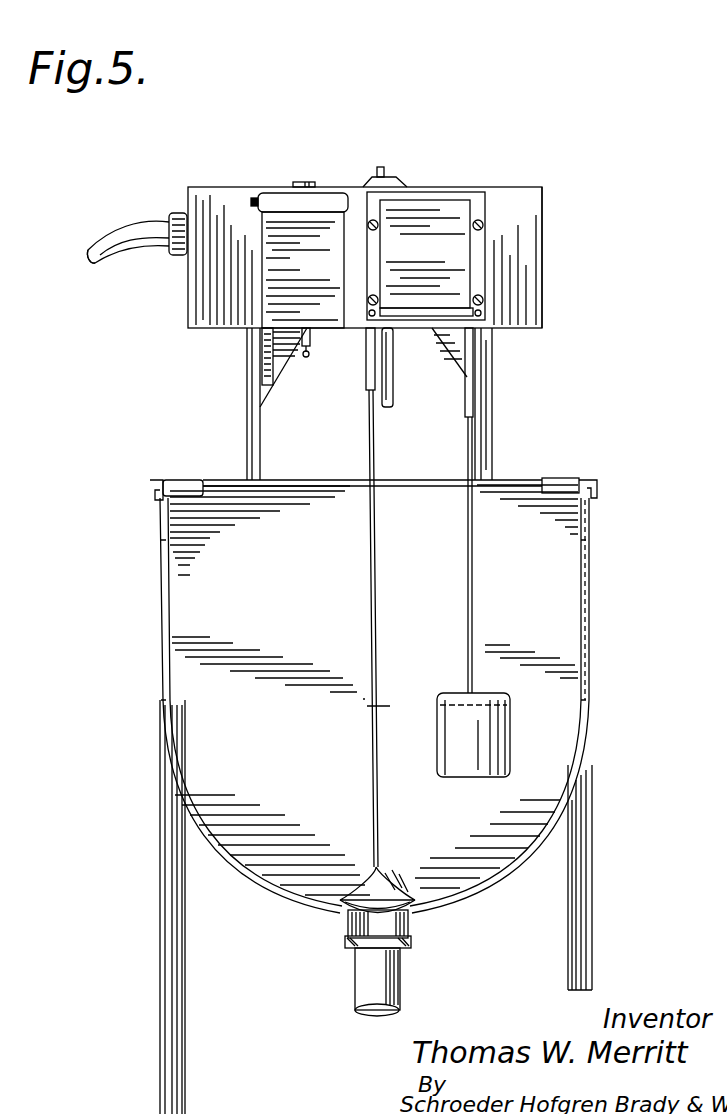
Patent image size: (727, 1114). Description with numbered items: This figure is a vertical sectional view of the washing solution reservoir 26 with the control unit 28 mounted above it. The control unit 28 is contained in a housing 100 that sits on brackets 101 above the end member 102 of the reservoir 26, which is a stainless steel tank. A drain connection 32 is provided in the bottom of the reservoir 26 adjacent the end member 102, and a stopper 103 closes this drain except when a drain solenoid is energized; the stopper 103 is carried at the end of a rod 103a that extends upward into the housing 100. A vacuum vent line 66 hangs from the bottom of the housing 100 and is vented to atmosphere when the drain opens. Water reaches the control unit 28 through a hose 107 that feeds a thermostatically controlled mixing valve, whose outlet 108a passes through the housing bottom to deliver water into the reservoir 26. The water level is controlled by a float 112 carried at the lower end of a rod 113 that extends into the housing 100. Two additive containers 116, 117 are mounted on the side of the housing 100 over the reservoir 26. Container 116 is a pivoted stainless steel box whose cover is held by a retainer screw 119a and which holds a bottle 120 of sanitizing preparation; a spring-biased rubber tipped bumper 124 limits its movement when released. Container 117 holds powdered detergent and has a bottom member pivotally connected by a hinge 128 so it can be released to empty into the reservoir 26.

The washing solution reservoir 26 is at (587, 657).
The control unit 28 is at (513, 186).
The drain connection 32 is at (400, 980).
The vacuum vent line 66 is at (393, 392).
The housing 100 is at (542, 280).
The brackets 101 is at (247, 428).
The end member 102 is at (374, 690).
The stopper 103 is at (395, 880).
The rod 103a is at (378, 578).
The hose 107 is at (130, 248).
The outlet 108a is at (270, 385).
The float 112 is at (466, 778).
The rod 113 is at (474, 556).
The container 116 is at (303, 260).
The additive container 117 is at (426, 256).
The retainer screw 119a is at (251, 206).
The bottle 120 is at (306, 182).
The bumper 124 is at (310, 352).
The hinge 128 is at (480, 316).